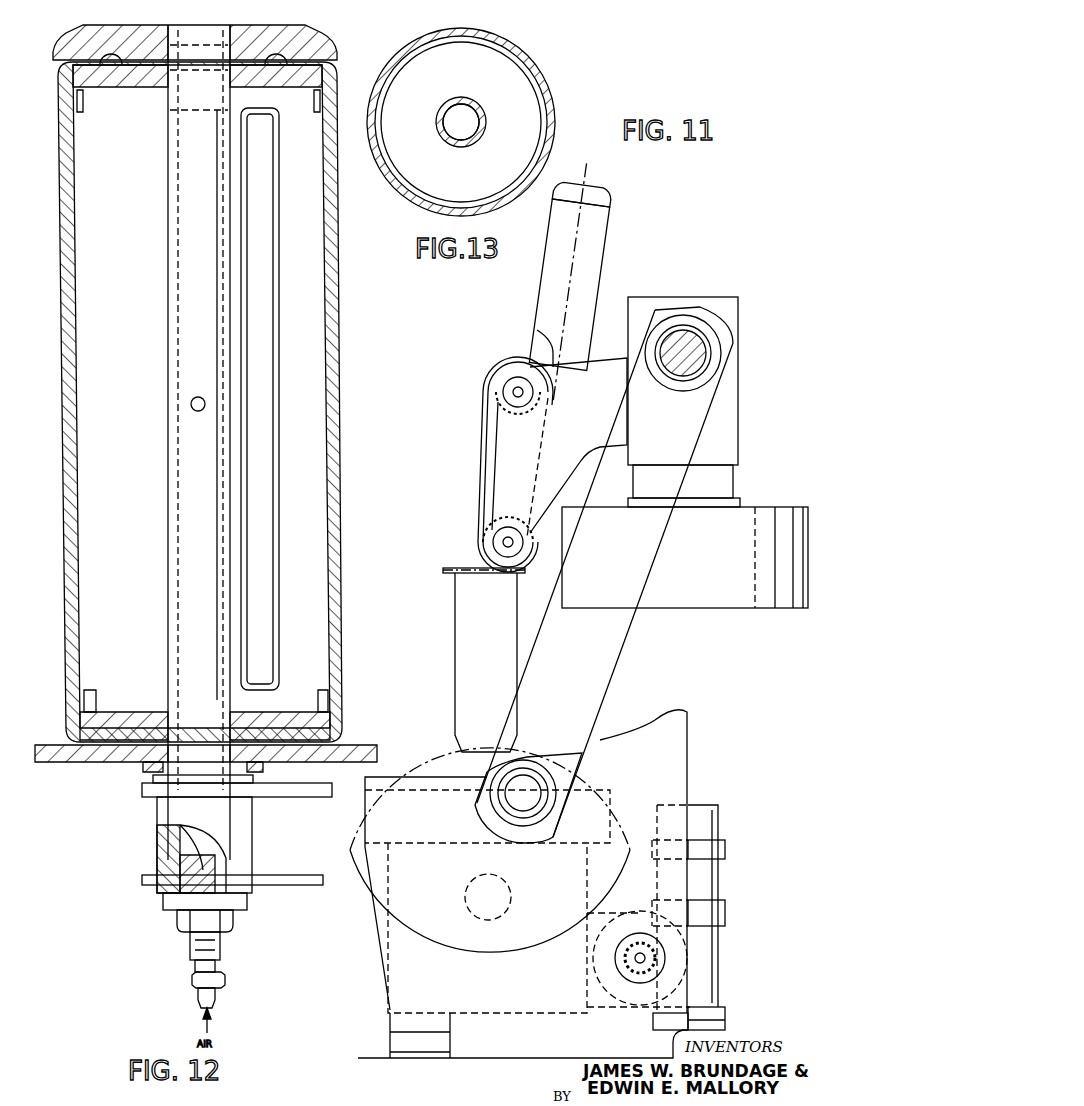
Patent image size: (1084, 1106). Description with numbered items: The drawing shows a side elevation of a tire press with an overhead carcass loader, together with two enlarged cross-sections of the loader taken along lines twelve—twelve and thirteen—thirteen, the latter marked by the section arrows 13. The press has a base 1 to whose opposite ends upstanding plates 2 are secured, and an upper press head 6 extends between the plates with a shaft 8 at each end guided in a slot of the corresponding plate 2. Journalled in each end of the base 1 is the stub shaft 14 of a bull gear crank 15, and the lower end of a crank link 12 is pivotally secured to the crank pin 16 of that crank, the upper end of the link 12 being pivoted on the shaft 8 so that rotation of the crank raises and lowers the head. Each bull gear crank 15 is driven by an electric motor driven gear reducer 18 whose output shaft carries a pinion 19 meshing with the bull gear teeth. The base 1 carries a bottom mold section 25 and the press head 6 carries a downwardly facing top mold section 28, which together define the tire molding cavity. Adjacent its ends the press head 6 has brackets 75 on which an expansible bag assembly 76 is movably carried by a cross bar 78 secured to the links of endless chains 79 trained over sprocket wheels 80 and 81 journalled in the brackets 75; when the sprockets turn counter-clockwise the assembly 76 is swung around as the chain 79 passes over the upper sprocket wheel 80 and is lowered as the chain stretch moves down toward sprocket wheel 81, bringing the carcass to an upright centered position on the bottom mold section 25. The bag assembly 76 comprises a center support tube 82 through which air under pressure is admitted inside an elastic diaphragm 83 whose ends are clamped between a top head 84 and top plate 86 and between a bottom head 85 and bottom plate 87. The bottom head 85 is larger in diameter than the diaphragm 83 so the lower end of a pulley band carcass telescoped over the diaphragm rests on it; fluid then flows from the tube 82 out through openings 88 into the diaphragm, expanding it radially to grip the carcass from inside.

In FIG. 11, the base 1 is at (390, 1040).
In FIG. 11, the upstanding plate 2 is at (687, 749).
In FIG. 11, the upper press head 6 is at (741, 419).
In FIG. 11, the shaft 8 is at (688, 370).
In FIG. 11, the crank link 12 is at (597, 167).
In FIG. 12, the section line 13 is at (357, 404).
In FIG. 11, the stub shaft 14 is at (505, 913).
In FIG. 11, the bull gear crank 15 is at (528, 1043).
In FIG. 11, the crank pin 16 is at (538, 801).
In FIG. 11, the electric motor driven gear reducer 18 is at (722, 954).
In FIG. 11, the pinion 19 is at (638, 975).
In FIG. 11, the bottom mold section 25 is at (365, 801).
In FIG. 11, the top mold section 28 is at (752, 610).
In FIG. 11, the bracket 75 is at (507, 468).
In FIG. 12, the expansible bag assembly 76 is at (340, 324).
In FIG. 13, the expansible bag assembly 76 is at (406, 204).
In FIG. 11, the expansible bag assembly 76 is at (548, 288).
In FIG. 12, the cross bar 78 is at (295, 887).
In FIG. 11, the endless chain 79 is at (485, 430).
In FIG. 11, the sprocket wheel 80 is at (503, 373).
In FIG. 11, the sprocket wheel 81 is at (525, 553).
In FIG. 12, the center support tube 82 is at (168, 597).
In FIG. 13, the center support tube 82 is at (481, 113).
In FIG. 12, the elastic diaphragm 83 is at (338, 661).
In FIG. 13, the elastic diaphragm 83 is at (547, 82).
In FIG. 11, the elastic diaphragm 83 is at (598, 254).
In FIG. 12, the top head 84 is at (322, 42).
In FIG. 11, the top head 84 is at (609, 203).
In FIG. 12, the bottom head 85 is at (351, 745).
In FIG. 11, the bottom head 85 is at (540, 331).
In FIG. 12, the top plate 86 is at (142, 88).
In FIG. 12, the bottom plate 87 is at (127, 712).
In FIG. 12, the opening 88 is at (191, 410).
In FIG. 13, the opening 88 is at (470, 146).